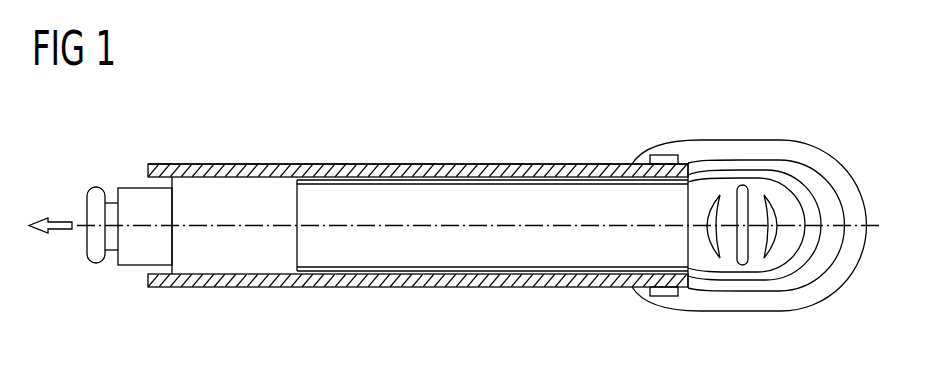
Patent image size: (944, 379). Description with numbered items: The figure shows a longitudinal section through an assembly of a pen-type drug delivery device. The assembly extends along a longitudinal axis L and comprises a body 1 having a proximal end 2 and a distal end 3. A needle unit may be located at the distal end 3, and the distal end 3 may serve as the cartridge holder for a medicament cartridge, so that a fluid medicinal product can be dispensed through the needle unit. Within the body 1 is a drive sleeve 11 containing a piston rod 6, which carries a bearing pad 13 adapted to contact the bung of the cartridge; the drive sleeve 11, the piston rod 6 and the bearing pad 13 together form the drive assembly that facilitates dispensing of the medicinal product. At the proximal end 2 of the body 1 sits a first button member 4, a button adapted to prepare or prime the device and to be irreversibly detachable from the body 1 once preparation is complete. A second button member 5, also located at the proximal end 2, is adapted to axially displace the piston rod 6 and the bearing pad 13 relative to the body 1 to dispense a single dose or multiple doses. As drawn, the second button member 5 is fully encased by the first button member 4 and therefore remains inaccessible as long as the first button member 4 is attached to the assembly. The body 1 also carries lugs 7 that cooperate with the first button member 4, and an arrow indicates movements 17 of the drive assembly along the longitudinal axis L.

The body 1 is at (607, 164).
The proximal end 2 is at (752, 125).
The distal end 3 is at (178, 158).
The first button member 4 is at (825, 283).
The second button member 5 is at (736, 266).
The piston rod 6 is at (147, 258).
The lug 7 is at (665, 297).
The drive sleeve 11 is at (393, 196).
The bearing pad 13 is at (96, 262).
The movements 17 is at (54, 230).
The longitudinal axis L is at (872, 232).